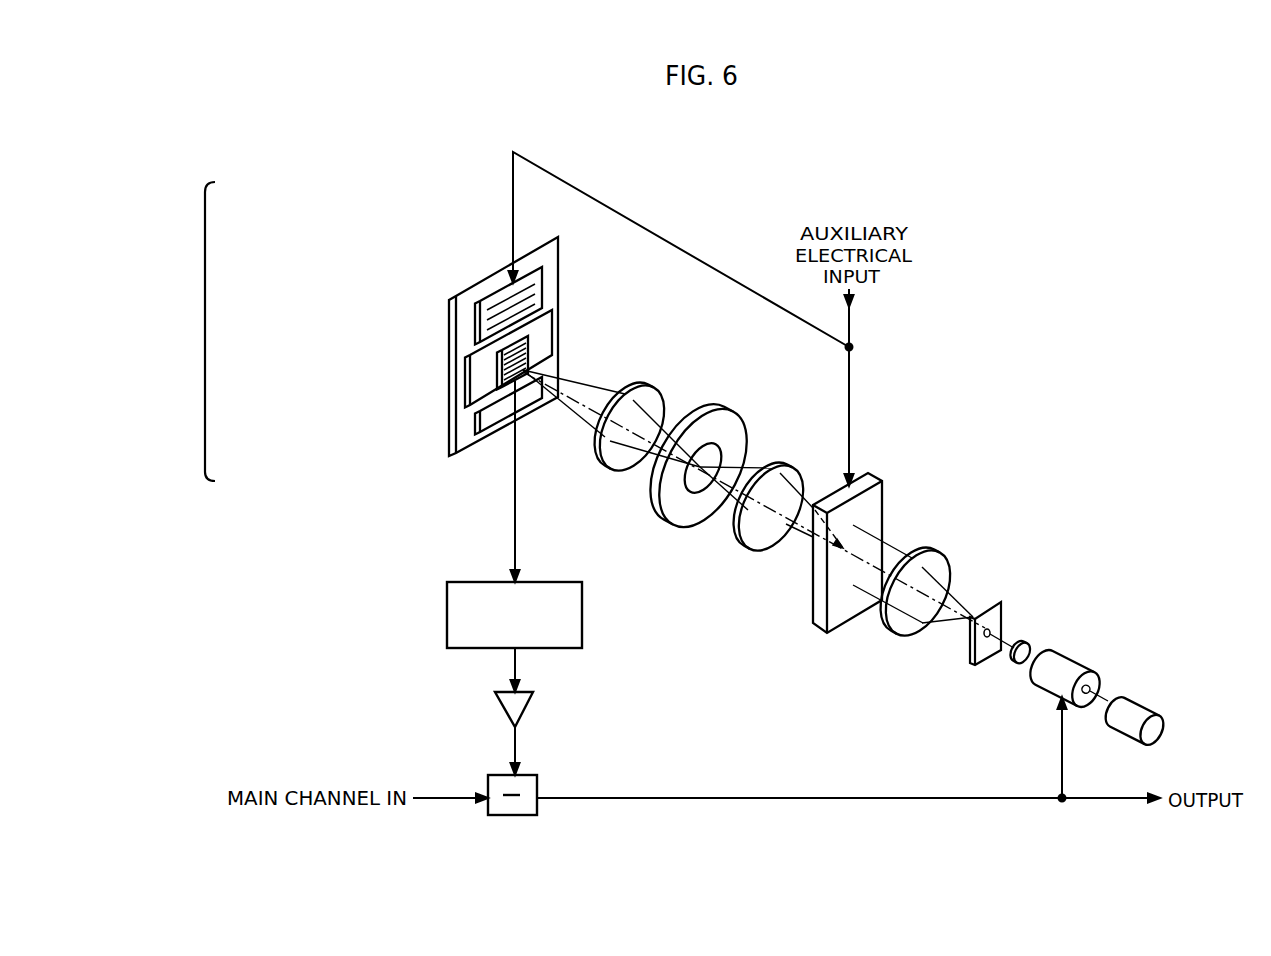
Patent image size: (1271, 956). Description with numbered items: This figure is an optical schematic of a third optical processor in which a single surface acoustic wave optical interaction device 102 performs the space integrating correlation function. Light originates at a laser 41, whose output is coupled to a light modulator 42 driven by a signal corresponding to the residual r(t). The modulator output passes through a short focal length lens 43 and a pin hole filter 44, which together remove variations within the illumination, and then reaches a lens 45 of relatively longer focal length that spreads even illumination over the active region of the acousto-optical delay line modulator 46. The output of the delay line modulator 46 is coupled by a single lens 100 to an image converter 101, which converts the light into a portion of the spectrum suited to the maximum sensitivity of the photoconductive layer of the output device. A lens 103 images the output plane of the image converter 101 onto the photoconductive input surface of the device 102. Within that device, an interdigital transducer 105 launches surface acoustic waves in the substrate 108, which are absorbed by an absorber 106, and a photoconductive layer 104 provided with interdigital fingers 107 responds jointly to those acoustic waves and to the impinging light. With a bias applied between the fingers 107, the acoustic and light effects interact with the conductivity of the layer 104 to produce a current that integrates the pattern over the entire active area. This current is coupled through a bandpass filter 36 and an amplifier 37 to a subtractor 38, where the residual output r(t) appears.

The surface acoustic wave optical interaction device 102 is at (205, 333).
The interdigital transducer 105 is at (489, 300).
The substrate 108 is at (449, 318).
The photoconductive layer 104 is at (465, 382).
The interdigital fingers 107 is at (502, 387).
The absorber 106 is at (478, 432).
The lens 103 is at (601, 470).
The image converter 101 is at (708, 400).
The lens 100 is at (742, 550).
The acousto-optical delay line modulator 46 is at (810, 612).
The lens 45 is at (897, 640).
The pin hole filter 44 is at (1012, 606).
The short focal length lens 43 is at (1028, 642).
The light modulator 42 is at (1074, 655).
The laser 41 is at (1152, 708).
The bandpass filter 36 is at (447, 612).
The amplifier 37 is at (495, 703).
The subtractor 38 is at (488, 815).